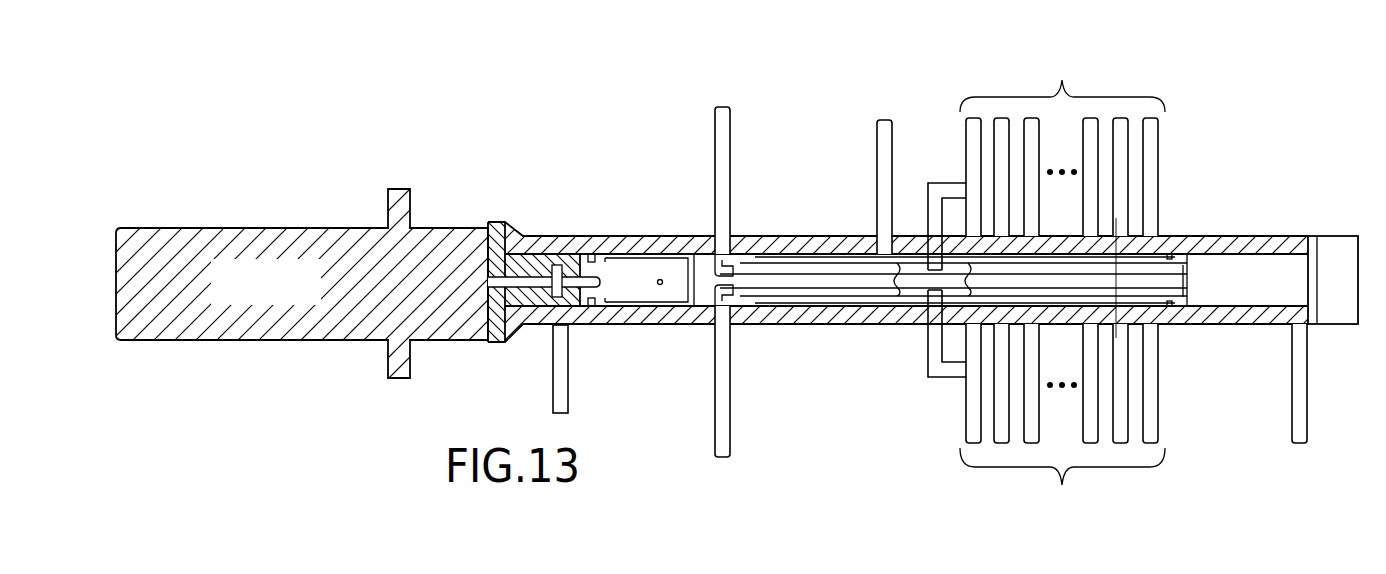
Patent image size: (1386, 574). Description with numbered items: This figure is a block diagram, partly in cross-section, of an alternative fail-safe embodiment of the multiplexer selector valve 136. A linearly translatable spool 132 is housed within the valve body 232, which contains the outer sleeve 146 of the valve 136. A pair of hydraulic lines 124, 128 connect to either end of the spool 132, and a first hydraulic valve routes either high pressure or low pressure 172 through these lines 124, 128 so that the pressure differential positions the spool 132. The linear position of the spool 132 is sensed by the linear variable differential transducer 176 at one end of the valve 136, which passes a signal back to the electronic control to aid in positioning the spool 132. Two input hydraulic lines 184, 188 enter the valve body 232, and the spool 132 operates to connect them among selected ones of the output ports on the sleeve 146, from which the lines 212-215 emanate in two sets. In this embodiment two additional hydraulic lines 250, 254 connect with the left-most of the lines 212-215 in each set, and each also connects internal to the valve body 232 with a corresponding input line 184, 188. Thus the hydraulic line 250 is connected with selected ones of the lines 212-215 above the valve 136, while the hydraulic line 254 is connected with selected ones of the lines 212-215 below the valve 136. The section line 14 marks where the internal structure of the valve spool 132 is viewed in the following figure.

The linear variable differential transducer 176 is at (263, 238).
The hydraulic line 124 is at (553, 382).
The input hydraulic line 184 is at (731, 121).
The input hydraulic line 188 is at (729, 433).
The low pressure 172 is at (886, 86).
The valve body 232 is at (834, 222).
The spool 132 is at (795, 282).
The hydraulic line 250 is at (928, 203).
The hydraulic line 254 is at (933, 352).
The hydraulic lines 212-215 is at (1158, 148).
The section line for FIG. 14 is at (1148, 338).
The outer sleeve 146 is at (1203, 238).
The multiplexer selector valve 136 is at (1287, 220).
The hydraulic line 128 is at (1292, 426).